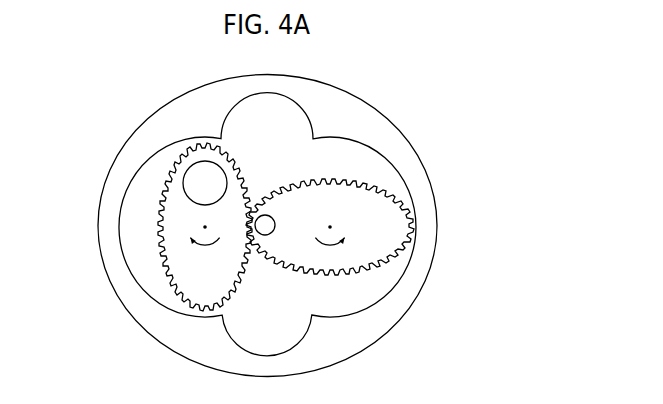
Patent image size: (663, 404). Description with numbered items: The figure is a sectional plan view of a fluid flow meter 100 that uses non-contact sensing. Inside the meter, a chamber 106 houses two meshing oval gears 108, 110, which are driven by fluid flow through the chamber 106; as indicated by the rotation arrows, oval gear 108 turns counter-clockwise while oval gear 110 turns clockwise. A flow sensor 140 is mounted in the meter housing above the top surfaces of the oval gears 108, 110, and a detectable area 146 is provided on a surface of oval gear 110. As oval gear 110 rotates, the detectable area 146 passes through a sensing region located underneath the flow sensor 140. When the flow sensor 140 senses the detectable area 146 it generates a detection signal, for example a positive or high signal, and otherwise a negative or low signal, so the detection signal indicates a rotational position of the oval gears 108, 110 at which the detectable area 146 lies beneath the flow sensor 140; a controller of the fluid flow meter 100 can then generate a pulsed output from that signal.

The fluid flow meter 100 is at (149, 77).
The chamber 106 is at (367, 305).
The oval gear 108 is at (375, 236).
The oval gear 110 is at (192, 269).
The flow sensor 140 is at (275, 224).
The detectable area 146 is at (204, 182).